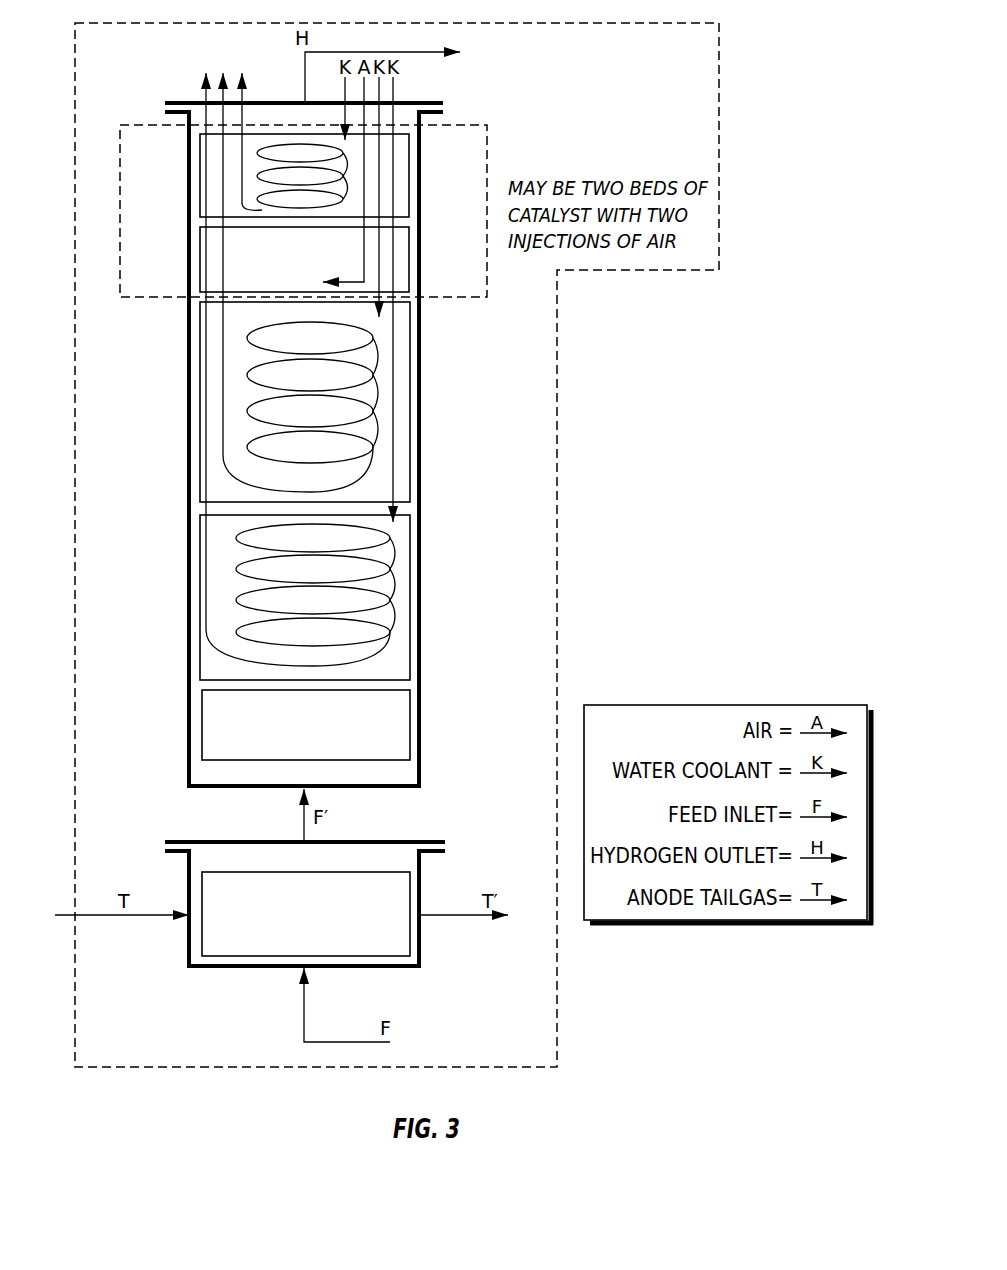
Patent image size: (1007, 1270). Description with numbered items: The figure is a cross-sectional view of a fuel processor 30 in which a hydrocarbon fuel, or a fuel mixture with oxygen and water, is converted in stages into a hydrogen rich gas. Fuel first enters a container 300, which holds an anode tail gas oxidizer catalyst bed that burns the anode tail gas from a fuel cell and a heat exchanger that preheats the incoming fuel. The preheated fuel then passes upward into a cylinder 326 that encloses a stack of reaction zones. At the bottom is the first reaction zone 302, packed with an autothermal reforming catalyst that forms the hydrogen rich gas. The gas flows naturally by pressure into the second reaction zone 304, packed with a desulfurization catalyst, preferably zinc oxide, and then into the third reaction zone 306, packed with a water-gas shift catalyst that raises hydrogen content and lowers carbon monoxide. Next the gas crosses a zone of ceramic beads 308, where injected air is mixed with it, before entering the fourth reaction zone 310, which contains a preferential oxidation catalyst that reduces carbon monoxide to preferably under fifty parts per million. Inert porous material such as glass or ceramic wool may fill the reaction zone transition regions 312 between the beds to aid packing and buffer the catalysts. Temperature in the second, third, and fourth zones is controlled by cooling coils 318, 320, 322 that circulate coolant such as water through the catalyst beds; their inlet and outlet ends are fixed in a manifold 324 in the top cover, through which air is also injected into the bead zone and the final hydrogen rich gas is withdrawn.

The fuel processor 30 is at (560, 475).
The container 300 is at (188, 892).
The first reaction zone 302 is at (213, 735).
The second reaction zone 304 is at (215, 663).
The third reaction zone 306 is at (215, 490).
The zone of ceramic beads 308 is at (213, 262).
The fourth reaction zone 310 is at (212, 203).
The reaction zone transition regions 312 is at (205, 297).
The cooling coil 318 is at (390, 615).
The cooling coil 320 is at (378, 430).
The cooling coil 322 is at (343, 207).
The manifold 324 is at (272, 103).
The cylinder 326 is at (189, 397).